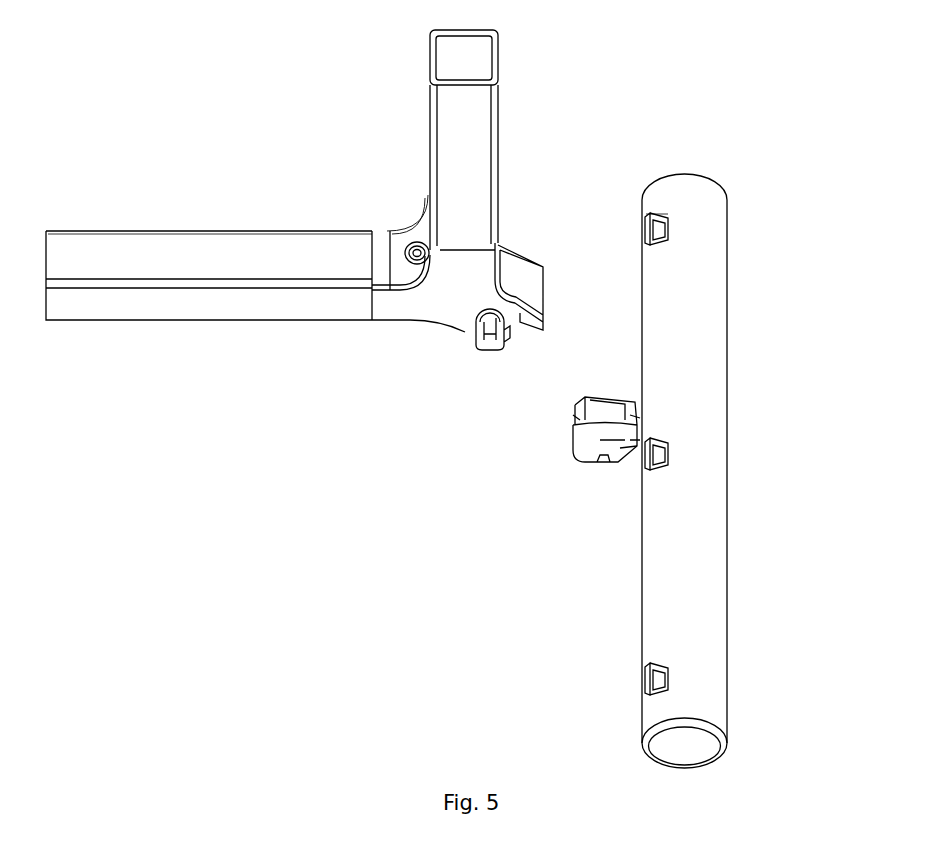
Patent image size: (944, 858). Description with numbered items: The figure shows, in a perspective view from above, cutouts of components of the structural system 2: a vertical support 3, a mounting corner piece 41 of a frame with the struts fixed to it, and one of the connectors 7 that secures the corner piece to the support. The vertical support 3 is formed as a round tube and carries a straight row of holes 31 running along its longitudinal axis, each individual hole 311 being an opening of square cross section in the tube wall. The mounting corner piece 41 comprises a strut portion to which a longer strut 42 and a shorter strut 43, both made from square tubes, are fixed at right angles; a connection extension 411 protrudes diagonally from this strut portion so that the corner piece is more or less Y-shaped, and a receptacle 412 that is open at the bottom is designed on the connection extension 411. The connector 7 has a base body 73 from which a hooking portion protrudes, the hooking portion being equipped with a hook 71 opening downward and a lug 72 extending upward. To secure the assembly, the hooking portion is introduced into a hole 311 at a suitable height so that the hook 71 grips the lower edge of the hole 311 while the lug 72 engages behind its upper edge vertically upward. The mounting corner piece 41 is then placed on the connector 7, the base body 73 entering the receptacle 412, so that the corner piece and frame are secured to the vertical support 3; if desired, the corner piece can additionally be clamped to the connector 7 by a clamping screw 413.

The structural system 2 is at (548, 630).
The vertical support 3 is at (742, 305).
The row of holes 31 is at (657, 205).
The hole 311 is at (665, 228).
The mounting corner piece 41 is at (398, 210).
The connection extension 411 is at (530, 270).
The receptacle 412 is at (490, 340).
The clamping screw 413 is at (405, 252).
The longer strut 42 is at (450, 108).
The shorter strut 43 is at (178, 307).
The connector 7 is at (552, 456).
The hook 71 is at (632, 448).
The lug 72 is at (640, 418).
The base body 73 is at (573, 420).